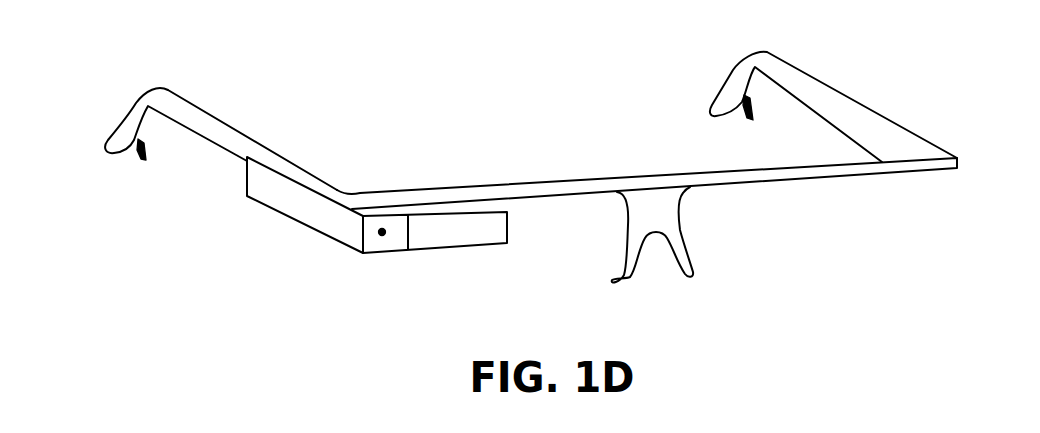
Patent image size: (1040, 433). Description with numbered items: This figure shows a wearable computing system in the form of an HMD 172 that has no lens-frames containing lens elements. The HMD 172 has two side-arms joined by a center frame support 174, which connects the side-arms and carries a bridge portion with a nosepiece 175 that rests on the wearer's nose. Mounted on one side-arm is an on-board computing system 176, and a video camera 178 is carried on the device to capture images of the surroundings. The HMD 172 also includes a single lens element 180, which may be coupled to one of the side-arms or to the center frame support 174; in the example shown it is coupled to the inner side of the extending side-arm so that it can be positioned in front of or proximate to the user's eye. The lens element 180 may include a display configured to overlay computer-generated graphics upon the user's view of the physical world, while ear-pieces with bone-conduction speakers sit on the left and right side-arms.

The HMD 172 is at (950, 215).
The center frame support 174 is at (552, 182).
The nosepiece 175 is at (677, 227).
The on-board computing system 176 is at (280, 213).
The video camera 178 is at (379, 237).
The single lens element 180 is at (460, 247).